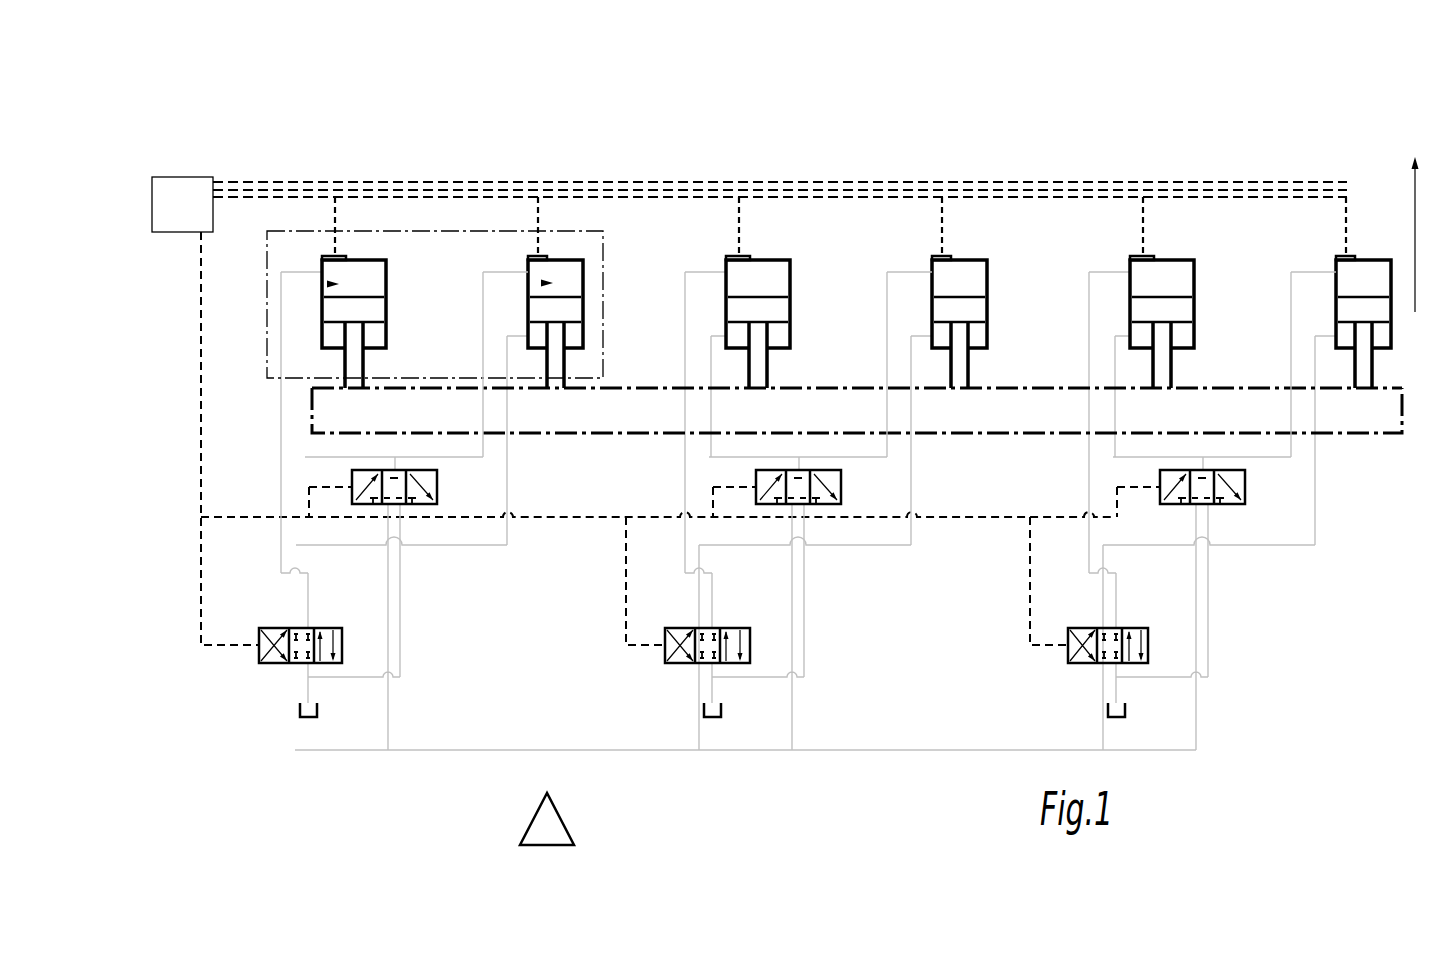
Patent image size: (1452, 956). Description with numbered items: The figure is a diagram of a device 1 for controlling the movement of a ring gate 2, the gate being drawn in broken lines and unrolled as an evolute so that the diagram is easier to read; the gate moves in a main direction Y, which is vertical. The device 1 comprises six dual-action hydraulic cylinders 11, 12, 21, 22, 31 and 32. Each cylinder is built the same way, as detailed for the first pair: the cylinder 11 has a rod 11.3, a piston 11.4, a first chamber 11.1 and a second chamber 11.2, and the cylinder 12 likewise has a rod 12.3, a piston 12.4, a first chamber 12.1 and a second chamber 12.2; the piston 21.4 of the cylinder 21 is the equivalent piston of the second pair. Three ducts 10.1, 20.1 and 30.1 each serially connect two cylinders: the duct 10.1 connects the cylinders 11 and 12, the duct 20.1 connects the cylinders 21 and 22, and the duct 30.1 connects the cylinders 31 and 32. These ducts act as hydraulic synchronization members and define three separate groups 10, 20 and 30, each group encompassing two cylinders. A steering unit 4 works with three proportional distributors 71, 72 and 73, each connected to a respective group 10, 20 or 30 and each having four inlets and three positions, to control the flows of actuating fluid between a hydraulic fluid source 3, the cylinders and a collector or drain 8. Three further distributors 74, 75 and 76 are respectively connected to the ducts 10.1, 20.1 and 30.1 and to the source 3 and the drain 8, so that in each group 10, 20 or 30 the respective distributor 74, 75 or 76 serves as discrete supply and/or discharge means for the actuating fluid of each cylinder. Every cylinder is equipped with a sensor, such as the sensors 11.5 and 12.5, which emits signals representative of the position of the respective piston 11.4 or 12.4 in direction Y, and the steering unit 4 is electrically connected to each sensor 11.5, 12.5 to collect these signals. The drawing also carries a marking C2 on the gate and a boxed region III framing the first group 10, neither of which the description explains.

The device 1 is at (192, 106).
The ring gate 2 is at (1402, 425).
The hydraulic fluid source 3 is at (550, 818).
The steering unit 4 is at (182, 204).
The collector or drain 8 is at (318, 711).
The group 10 is at (517, 108).
The duct 10.1 is at (355, 455).
The dual-action hydraulic cylinder 11 is at (362, 235).
The first chamber 11.1 is at (331, 343).
The second chamber 11.2 is at (320, 279).
The rod 11.3 is at (353, 333).
The piston 11.4 is at (340, 306).
The sensor 11.5 is at (335, 257).
The dual-action hydraulic cylinder 12 is at (522, 228).
The first chamber 12.1 is at (529, 342).
The second chamber 12.2 is at (527, 278).
The rod 12.3 is at (558, 333).
The piston 12.4 is at (550, 307).
The sensor 12.5 is at (537, 255).
The group 20 is at (923, 111).
The duct 20.1 is at (750, 455).
The dual-action hydraulic cylinder 21 is at (764, 236).
The piston 21.4 is at (773, 307).
The dual-action hydraulic cylinder 22 is at (929, 228).
The group 30 is at (1328, 115).
The duct 30.1 is at (1140, 455).
The dual-action hydraulic cylinder 31 is at (1172, 240).
The dual-action hydraulic cylinder 32 is at (1334, 230).
The proportional distributor 71 is at (255, 676).
The proportional distributor 72 is at (658, 673).
The proportional distributor 73 is at (1065, 674).
The distributor 74 is at (405, 489).
The distributor 75 is at (810, 489).
The distributor 76 is at (1215, 488).
The reference line C2 is at (1387, 388).
The main direction Y is at (1423, 232).
The detail region III is at (275, 231).